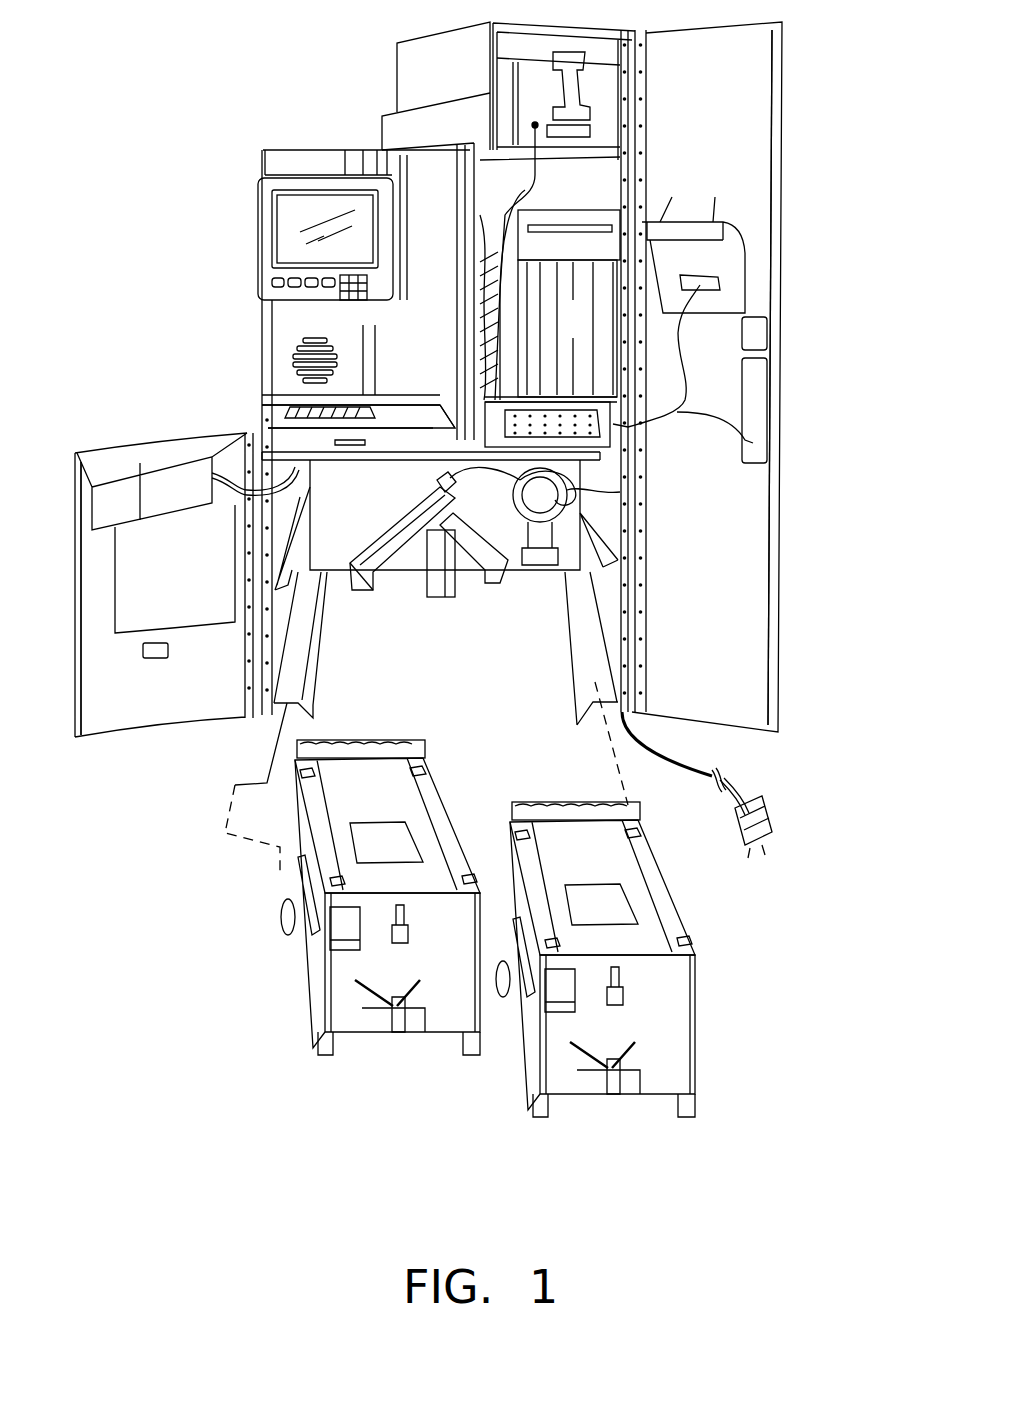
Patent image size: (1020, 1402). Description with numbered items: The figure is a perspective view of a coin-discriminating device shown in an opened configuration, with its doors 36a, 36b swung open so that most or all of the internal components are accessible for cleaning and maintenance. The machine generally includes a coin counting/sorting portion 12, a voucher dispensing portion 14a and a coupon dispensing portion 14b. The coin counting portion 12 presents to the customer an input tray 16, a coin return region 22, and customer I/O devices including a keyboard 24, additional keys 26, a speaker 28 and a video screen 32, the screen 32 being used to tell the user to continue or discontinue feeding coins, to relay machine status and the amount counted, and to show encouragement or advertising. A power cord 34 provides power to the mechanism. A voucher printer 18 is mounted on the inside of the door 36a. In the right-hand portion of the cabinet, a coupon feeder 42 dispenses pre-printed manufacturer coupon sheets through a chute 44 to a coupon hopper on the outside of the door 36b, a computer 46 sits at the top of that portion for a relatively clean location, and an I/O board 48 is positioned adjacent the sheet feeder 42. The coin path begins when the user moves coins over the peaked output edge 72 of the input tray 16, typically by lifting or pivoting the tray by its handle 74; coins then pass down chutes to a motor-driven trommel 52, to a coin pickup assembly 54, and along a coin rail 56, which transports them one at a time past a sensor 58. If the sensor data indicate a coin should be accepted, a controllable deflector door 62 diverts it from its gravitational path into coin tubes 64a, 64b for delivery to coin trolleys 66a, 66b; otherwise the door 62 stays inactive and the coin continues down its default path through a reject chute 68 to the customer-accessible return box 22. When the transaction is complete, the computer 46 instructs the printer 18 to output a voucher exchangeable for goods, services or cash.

The coin counting/sorting portion 12 is at (544, 608).
The voucher dispensing portion 14a is at (180, 417).
The coupon dispensing portion 14b is at (650, 133).
The input tray 16 is at (305, 405).
The voucher printer 18 is at (165, 510).
The coin return region 22 is at (160, 658).
The keyboard 24 is at (368, 290).
The additional keys 26 is at (272, 283).
The speaker 28 is at (290, 355).
The video screen 32 is at (311, 197).
The power cord 34 is at (722, 794).
The door 36a is at (148, 720).
The door 36b is at (742, 720).
The coupon feeder 42 is at (543, 213).
The chute 44 is at (690, 217).
The computer 46 is at (605, 110).
The I/O board 48 is at (584, 333).
The trommel 52 is at (605, 430).
The coin pickup assembly 54 is at (580, 492).
The coin rail 56 is at (467, 487).
The sensor 58 is at (440, 480).
The controllable deflector door 62 is at (423, 495).
The coin tube 64a is at (390, 555).
The coin tube 64b is at (478, 553).
The coin trolley 66a is at (365, 1040).
The coin trolley 66b is at (612, 1098).
The reject chute 68 is at (442, 593).
The peaked output edge 72 is at (388, 410).
The handle 74 is at (272, 425).